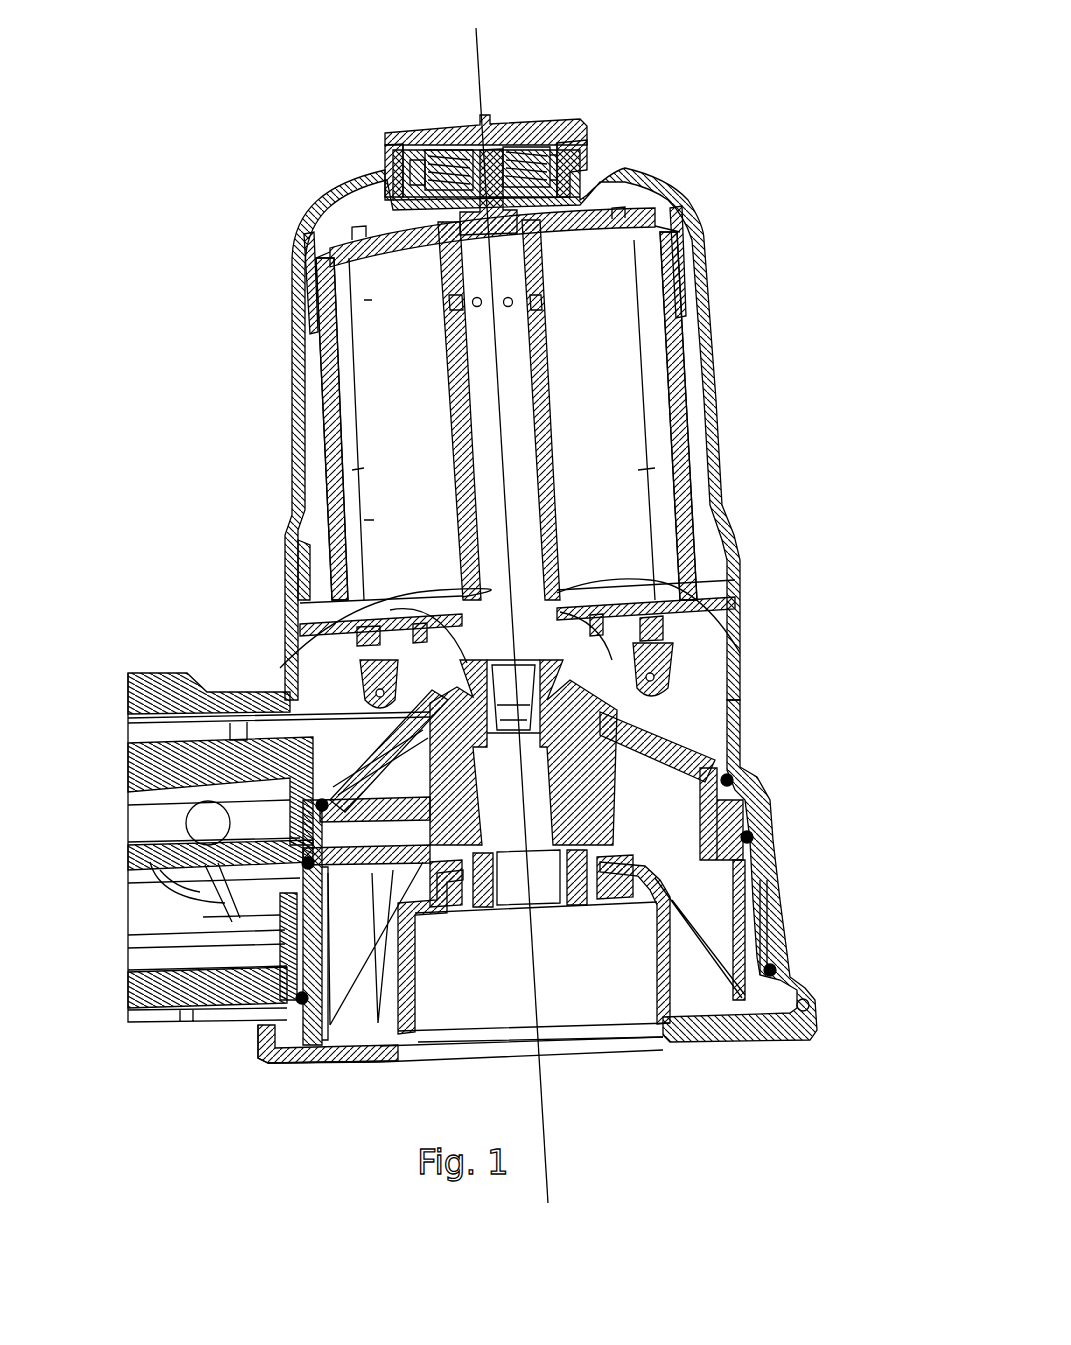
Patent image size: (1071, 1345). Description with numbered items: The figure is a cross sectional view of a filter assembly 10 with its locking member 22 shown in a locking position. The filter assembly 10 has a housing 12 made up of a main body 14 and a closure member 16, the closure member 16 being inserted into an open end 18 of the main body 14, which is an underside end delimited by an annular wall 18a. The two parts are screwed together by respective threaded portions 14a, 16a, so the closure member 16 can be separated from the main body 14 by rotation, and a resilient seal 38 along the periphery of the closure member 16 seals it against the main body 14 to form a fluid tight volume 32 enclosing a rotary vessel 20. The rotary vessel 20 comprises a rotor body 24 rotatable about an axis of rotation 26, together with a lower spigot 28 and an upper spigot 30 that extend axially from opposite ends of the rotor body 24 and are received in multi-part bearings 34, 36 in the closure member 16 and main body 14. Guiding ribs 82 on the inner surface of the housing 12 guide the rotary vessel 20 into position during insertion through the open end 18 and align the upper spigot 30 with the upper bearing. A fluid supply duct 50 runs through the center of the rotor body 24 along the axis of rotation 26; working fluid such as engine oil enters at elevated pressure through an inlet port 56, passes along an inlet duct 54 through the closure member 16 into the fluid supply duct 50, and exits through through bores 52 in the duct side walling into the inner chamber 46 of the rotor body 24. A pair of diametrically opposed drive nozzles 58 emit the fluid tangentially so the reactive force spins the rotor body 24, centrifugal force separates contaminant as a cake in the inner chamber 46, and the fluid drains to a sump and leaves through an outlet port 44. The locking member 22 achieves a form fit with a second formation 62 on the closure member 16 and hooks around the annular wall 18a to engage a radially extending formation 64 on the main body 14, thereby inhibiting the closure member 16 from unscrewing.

The filter assembly 10 is at (740, 95).
The housing 12 is at (713, 310).
The main body 14 is at (718, 398).
The threaded portion 14a is at (773, 890).
The closure member 16 is at (727, 770).
The threaded portion 16a is at (780, 920).
The open end 18 is at (358, 1080).
The annular wall 18a is at (800, 970).
The rotary vessel 20 is at (325, 243).
The locking member 22 is at (763, 1050).
The rotor body 24 is at (318, 405).
The axis of rotation 26 is at (476, 53).
The lower spigot 28 is at (567, 670).
The upper spigot 30 is at (543, 145).
The fluid tight volume 32 is at (318, 467).
The bearing 34 is at (335, 622).
The bearing 36 is at (435, 173).
The resilient seal 38 is at (747, 837).
The outlet port 44 is at (128, 720).
The inner chamber 46 is at (426, 458).
The fluid supply duct 50 is at (510, 472).
The through bores 52 is at (448, 303).
The inlet duct 54 is at (440, 830).
The inlet port 56 is at (128, 792).
The drive nozzles 58 is at (377, 690).
The second formation 62 is at (597, 910).
The radially extending formation 64 is at (263, 1060).
The guiding ribs 82 is at (678, 250).